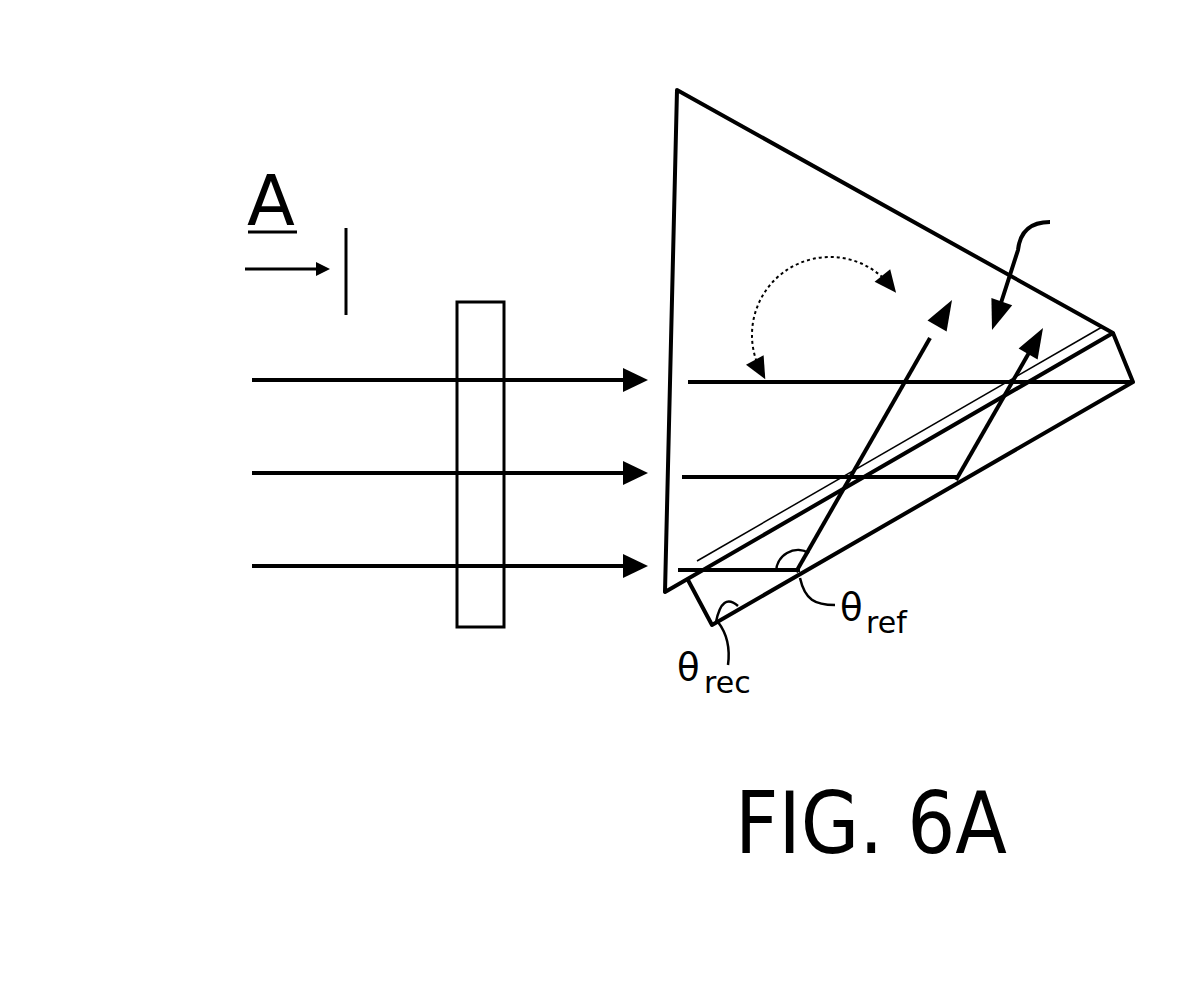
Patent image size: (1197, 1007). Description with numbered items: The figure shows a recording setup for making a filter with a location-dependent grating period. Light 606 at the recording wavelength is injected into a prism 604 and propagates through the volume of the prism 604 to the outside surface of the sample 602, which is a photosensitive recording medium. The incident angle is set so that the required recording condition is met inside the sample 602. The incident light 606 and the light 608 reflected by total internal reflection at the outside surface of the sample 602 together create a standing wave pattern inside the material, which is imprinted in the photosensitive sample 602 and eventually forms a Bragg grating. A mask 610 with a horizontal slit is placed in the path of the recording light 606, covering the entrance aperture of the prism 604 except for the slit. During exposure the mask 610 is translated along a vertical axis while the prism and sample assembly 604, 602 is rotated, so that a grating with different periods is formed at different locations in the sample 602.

The sample 602 is at (1030, 407).
The prism 604 is at (758, 197).
The light 606 is at (385, 603).
The light reflected via total internal reflection 608 is at (1059, 265).
The mask 610 is at (468, 323).